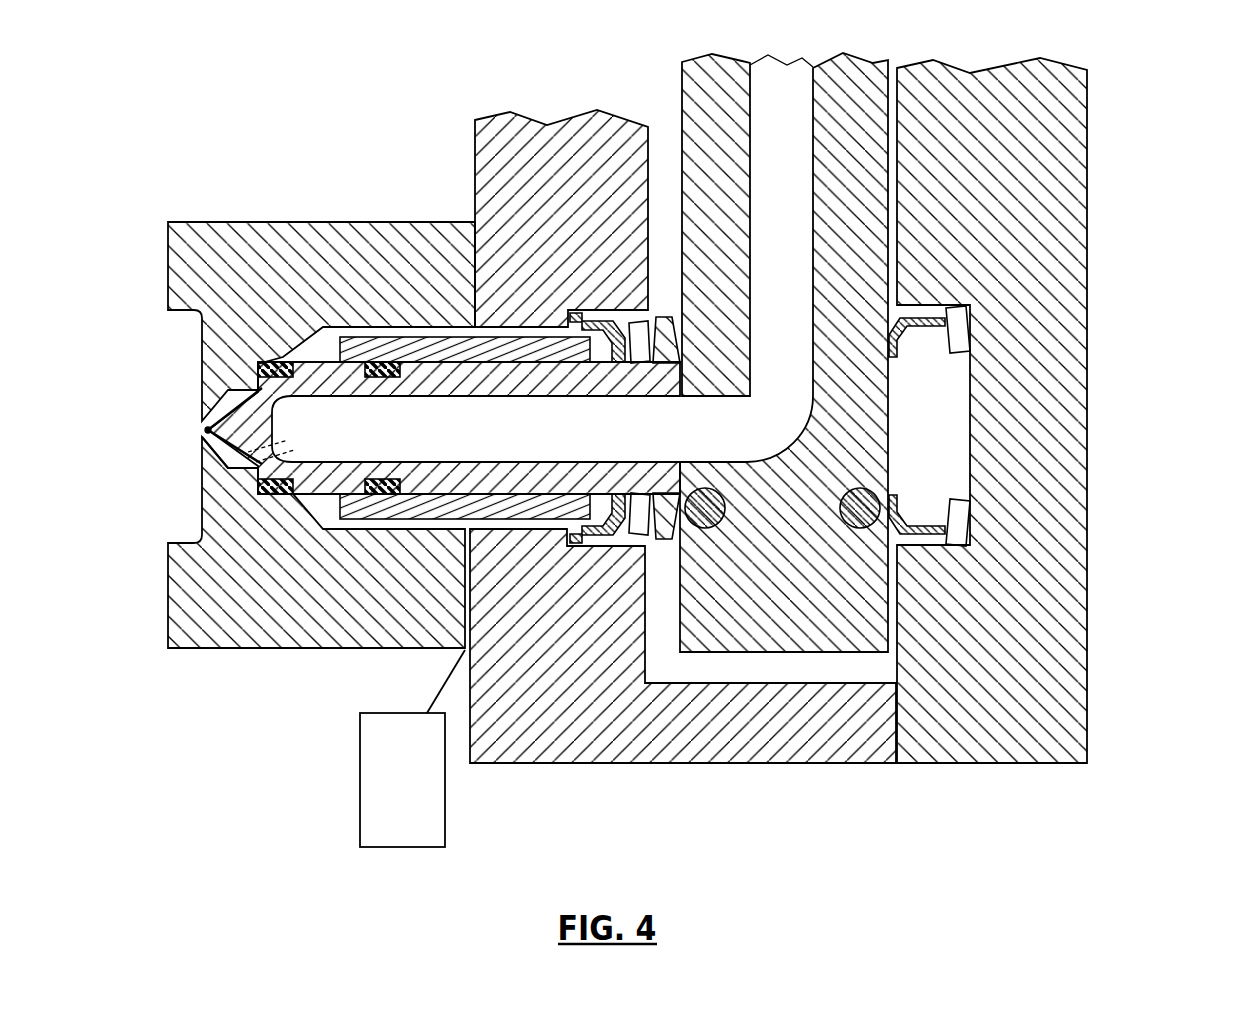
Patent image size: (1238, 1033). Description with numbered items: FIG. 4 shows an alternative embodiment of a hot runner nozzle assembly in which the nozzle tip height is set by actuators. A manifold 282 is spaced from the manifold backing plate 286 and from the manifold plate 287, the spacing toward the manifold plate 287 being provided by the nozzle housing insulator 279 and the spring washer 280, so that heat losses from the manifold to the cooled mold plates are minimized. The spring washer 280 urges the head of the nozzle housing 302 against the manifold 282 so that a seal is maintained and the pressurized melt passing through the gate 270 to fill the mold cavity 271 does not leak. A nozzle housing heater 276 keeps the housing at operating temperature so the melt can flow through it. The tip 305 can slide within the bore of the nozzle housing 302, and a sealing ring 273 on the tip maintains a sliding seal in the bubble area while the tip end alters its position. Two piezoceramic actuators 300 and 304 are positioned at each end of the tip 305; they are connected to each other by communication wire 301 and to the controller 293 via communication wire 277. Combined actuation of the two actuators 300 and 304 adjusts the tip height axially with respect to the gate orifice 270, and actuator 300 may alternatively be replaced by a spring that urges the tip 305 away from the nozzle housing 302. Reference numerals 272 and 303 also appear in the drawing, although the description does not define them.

The gate 270 is at (205, 430).
The mold cavity 271 is at (195, 353).
The nozzle body 272 is at (205, 255).
The sealing ring 273 is at (240, 470).
The nozzle housing heater 276 is at (374, 350).
The communication wire 277 is at (427, 702).
The nozzle housing insulator 279 is at (600, 530).
The spring washer 280 is at (625, 520).
The manifold 282 is at (863, 237).
The manifold backing plate 286 is at (1030, 430).
The manifold plate 287 is at (521, 137).
The controller 293 is at (380, 832).
The piezoceramic actuator 300 is at (378, 486).
The communication wire 301 is at (272, 494).
The nozzle housing 302 is at (690, 522).
The sleeve 303 is at (316, 482).
The piezoceramic actuator 304 is at (258, 486).
The tip 305 is at (235, 440).